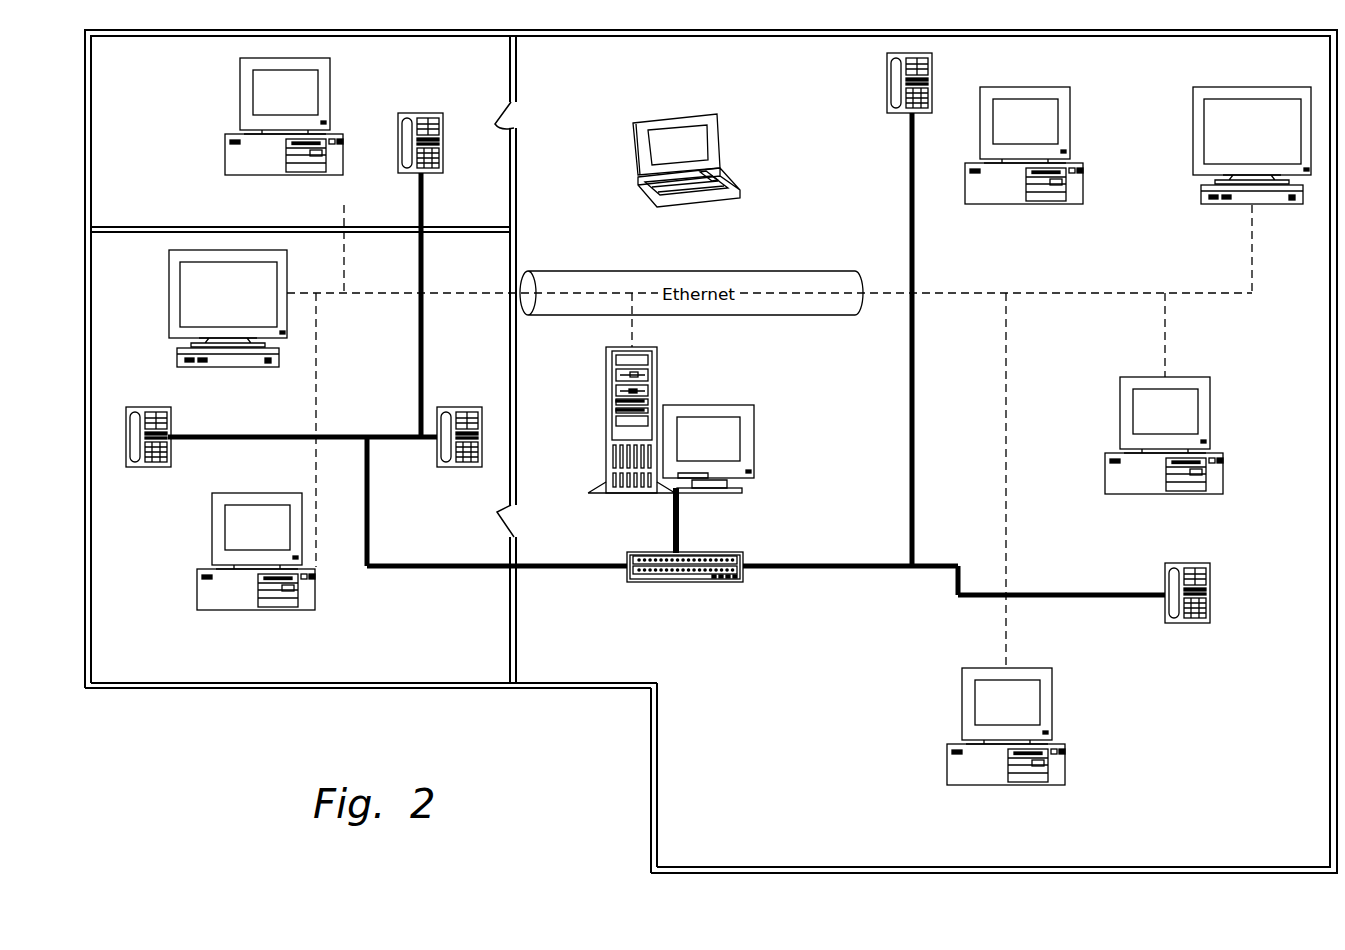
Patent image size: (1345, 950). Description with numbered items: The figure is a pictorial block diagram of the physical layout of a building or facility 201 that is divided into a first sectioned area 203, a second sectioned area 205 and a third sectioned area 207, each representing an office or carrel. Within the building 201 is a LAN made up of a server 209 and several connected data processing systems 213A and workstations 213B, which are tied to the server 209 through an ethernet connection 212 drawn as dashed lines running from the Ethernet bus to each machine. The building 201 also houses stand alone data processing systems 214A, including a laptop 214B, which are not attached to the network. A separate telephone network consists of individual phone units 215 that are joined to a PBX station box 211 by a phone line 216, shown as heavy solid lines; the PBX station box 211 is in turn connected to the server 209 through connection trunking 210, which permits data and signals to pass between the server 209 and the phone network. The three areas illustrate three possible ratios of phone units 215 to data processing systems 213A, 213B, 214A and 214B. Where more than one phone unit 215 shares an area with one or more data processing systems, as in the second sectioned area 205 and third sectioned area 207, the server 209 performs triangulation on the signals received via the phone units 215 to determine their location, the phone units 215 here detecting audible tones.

The building 201 is at (458, 688).
The first sectioned area 203 is at (482, 82).
The second sectioned area 205 is at (244, 672).
The third sectioned area 207 is at (687, 785).
The server 209 is at (606, 366).
The connection trunking 210 is at (680, 548).
The PBX station box 211 is at (745, 558).
The ethernet connection 212 is at (317, 403).
The data processing system 213A is at (240, 93).
The workstation 213B is at (168, 299).
The stand alone data processing system 214A is at (1070, 126).
The laptop 214B is at (722, 145).
The phone unit 215 is at (421, 113).
The phone line 216 is at (423, 566).